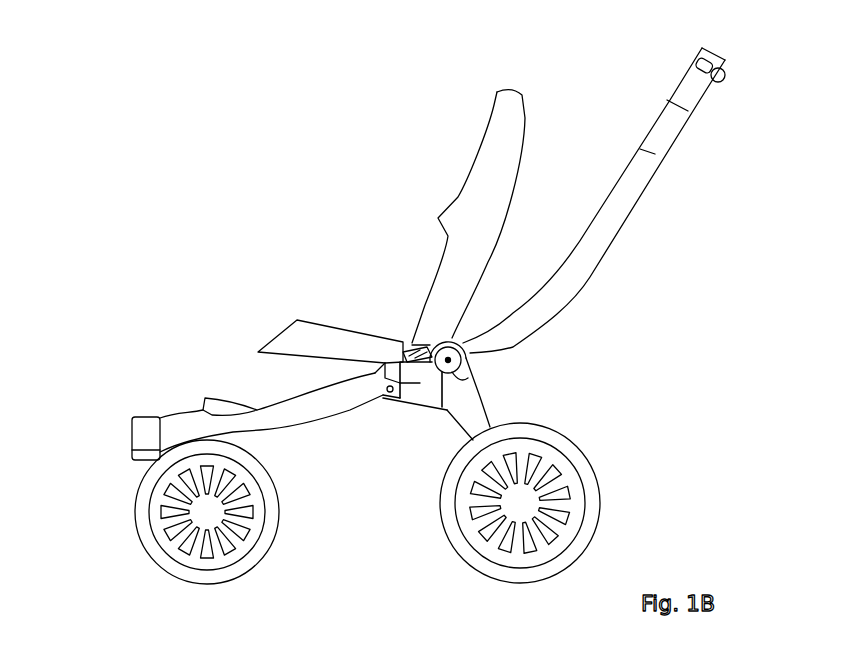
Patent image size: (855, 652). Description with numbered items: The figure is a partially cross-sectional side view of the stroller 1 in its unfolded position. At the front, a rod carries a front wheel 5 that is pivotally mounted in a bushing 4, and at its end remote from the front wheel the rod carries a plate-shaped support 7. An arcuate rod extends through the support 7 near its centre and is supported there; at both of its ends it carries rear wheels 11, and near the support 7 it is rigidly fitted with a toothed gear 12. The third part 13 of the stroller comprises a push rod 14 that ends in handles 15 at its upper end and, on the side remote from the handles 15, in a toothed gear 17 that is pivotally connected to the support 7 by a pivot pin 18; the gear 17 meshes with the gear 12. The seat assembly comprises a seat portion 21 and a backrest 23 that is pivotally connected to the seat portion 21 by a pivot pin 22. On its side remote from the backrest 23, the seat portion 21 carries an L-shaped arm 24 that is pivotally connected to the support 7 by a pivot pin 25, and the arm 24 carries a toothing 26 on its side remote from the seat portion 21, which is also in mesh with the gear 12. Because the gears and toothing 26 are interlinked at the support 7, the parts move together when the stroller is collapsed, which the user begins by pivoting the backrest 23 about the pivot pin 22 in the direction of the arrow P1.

The stroller 1 is at (200, 183).
The arrow P1 is at (390, 157).
The bushing 4 is at (140, 435).
The front wheel 5 is at (143, 527).
The plate-shaped support 7 is at (425, 378).
The rear wheel 11 is at (599, 494).
The gear 12 is at (481, 382).
The third part 13 is at (602, 117).
The push rod 14 is at (622, 205).
The handles 15 is at (727, 78).
The gear 17 is at (436, 341).
The pivot pin 18 is at (456, 336).
The seat portion 21 is at (317, 337).
The pivot pin 22 is at (405, 349).
The backrest 23 is at (482, 178).
The L-shaped arm 24 is at (407, 392).
The pivot pin 25 is at (384, 401).
The toothing 26 is at (443, 410).